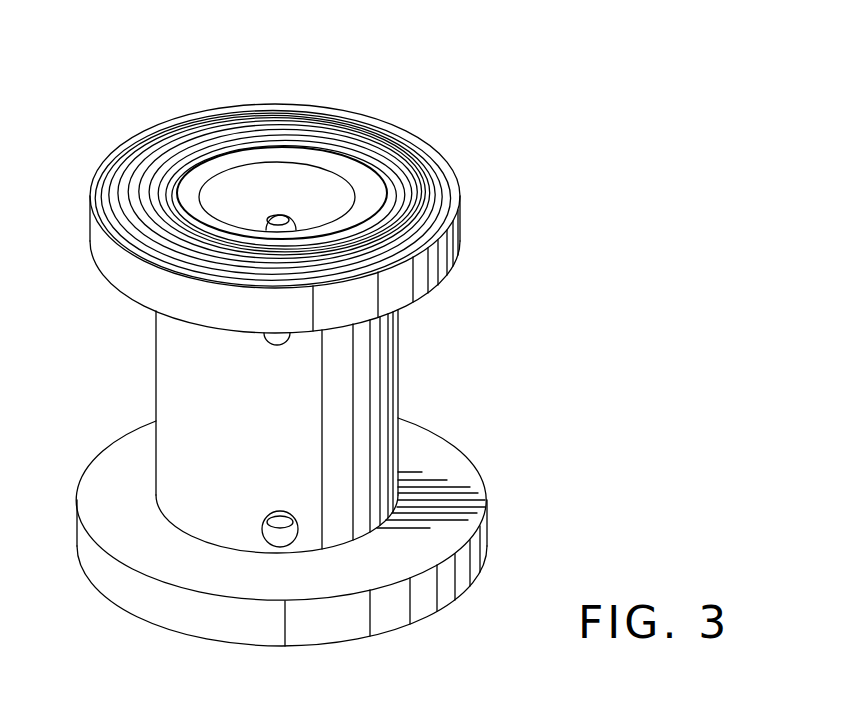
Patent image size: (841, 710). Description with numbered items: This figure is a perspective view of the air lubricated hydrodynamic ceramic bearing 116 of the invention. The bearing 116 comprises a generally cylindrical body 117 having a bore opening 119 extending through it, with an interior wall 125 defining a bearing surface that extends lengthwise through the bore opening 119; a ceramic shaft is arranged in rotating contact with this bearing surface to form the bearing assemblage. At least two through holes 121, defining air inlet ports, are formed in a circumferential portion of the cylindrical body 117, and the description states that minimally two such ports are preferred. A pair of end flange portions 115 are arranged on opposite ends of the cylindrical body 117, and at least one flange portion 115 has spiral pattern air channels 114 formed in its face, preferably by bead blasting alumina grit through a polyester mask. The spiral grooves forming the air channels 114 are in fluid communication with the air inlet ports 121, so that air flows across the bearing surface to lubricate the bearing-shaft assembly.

The spiral pattern air channels 114 is at (393, 122).
The end flange portions 115 is at (440, 155).
The air lubricated hydrodynamic ceramic bearing 116 is at (509, 221).
The generally cylindrical body 117 is at (398, 372).
The bore opening 119 is at (312, 175).
The through holes 121 is at (277, 340).
The interior wall 125 is at (232, 174).